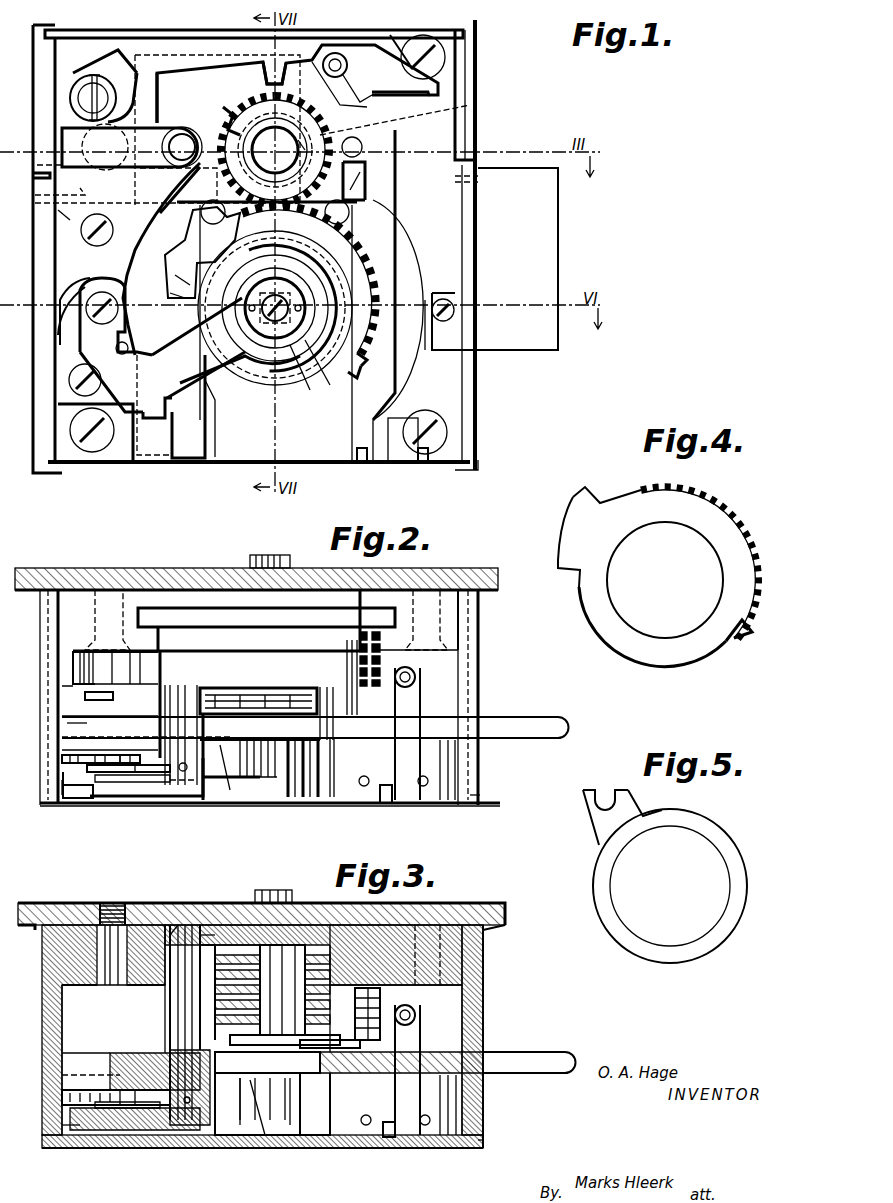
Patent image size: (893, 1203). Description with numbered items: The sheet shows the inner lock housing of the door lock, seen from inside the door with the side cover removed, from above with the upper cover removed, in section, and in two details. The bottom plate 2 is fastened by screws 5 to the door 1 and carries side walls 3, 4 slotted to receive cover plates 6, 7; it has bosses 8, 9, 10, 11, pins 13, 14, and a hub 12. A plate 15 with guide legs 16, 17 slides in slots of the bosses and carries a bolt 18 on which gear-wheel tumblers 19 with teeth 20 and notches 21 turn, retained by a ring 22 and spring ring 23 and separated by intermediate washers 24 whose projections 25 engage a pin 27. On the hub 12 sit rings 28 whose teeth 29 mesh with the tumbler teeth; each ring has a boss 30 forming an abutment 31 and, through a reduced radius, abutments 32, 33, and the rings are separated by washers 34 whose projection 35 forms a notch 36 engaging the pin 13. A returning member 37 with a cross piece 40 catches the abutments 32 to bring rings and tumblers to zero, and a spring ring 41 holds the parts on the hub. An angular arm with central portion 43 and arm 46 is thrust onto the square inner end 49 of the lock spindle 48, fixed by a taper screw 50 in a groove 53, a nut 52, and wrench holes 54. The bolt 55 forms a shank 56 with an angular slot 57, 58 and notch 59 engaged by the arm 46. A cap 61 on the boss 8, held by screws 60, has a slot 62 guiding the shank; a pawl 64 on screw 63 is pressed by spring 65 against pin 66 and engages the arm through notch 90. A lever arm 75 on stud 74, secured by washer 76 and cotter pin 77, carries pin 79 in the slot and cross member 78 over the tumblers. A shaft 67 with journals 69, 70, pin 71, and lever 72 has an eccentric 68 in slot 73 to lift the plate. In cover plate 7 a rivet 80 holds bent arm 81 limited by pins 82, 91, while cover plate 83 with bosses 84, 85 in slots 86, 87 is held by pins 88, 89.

In FIG. 2, the door 1 is at (68, 580).
In FIG. 3, the door 1 is at (52, 915).
In FIG. 2, the bottom plate 2 is at (140, 600).
In FIG. 3, the bottom plate 2 is at (425, 935).
In FIG. 1, the side wall 3 is at (50, 450).
In FIG. 2, the side wall 3 is at (42, 605).
In FIG. 3, the side wall 3 is at (48, 1018).
In FIG. 1, the side wall 4 is at (470, 445).
In FIG. 2, the side wall 4 is at (470, 633).
In FIG. 3, the side wall 4 is at (480, 990).
In FIG. 1, the screws 5 is at (423, 50).
In FIG. 2, the screws 5 is at (108, 580).
In FIG. 3, the screws 5 is at (100, 908).
In FIG. 1, the cover plate 6 is at (400, 40).
In FIG. 1, the cover plate 7 is at (72, 462).
In FIG. 2, the cover plate 7 is at (442, 663).
In FIG. 3, the cover plate 7 is at (455, 1010).
In FIG. 1, the boss 8 is at (130, 315).
In FIG. 2, the boss 8 is at (70, 703).
In FIG. 3, the boss 8 is at (75, 996).
In FIG. 1, the boss 9 is at (80, 47).
In FIG. 2, the boss 9 is at (70, 632).
In FIG. 3, the boss 9 is at (65, 955).
In FIG. 1, the boss 10 is at (122, 445).
In FIG. 1, the boss 11 is at (447, 405).
In FIG. 2, the boss 11 is at (450, 607).
In FIG. 3, the boss 11 is at (470, 945).
In FIG. 1, the hub 12 is at (275, 340).
In FIG. 1, the pin 13 is at (205, 235).
In FIG. 2, the pin 13 is at (215, 688).
In FIG. 3, the pin 13 is at (212, 1000).
In FIG. 1, the pin 14 is at (345, 212).
In FIG. 1, the plate 15 is at (165, 80).
In FIG. 2, the plate 15 is at (175, 618).
In FIG. 3, the plate 15 is at (345, 935).
In FIG. 1, the guide leg 16 is at (210, 440).
In FIG. 1, the guide leg 17 is at (360, 437).
In FIG. 1, the bolt 18 is at (245, 120).
In FIG. 3, the bolt 18 is at (320, 940).
In FIG. 1, the tumblers 19 is at (275, 135).
In FIG. 3, the tumblers 19 is at (262, 960).
In FIG. 1, the teeth 20 is at (345, 85).
In FIG. 1, the notch 21 is at (225, 125).
In FIG. 1, the ring 22 is at (292, 140).
In FIG. 1, the spring ring 23 is at (255, 148).
In FIG. 3, the intermediate washers 24 is at (240, 950).
In FIG. 1, the projection 25 is at (362, 133).
In FIG. 1, the pin 27 is at (362, 148).
In FIG. 3, the pin 27 is at (410, 930).
In FIG. 1, the rings 28 is at (367, 358).
In FIG. 4, the rings 28 is at (665, 660).
In FIG. 1, the teeth 29 is at (340, 290).
In FIG. 4, the teeth 29 is at (718, 500).
In FIG. 2, the teeth 29 is at (372, 688).
In FIG. 3, the teeth 29 is at (385, 1000).
In FIG. 1, the boss 30 is at (180, 283).
In FIG. 4, the boss 30 is at (590, 513).
In FIG. 4, the abutment 31 is at (595, 495).
In FIG. 1, the abutment 32 is at (180, 298).
In FIG. 4, the abutment 32 is at (568, 580).
In FIG. 1, the abutment 33 is at (357, 370).
In FIG. 4, the abutment 33 is at (745, 635).
In FIG. 4, the intermediate washers 34 is at (665, 580).
In FIG. 5, the intermediate washers 34 is at (670, 956).
In FIG. 1, the projection 35 is at (190, 255).
In FIG. 5, the projection 35 is at (614, 830).
In FIG. 5, the notch 36 is at (604, 792).
In FIG. 1, the returning member 37 is at (325, 355).
In FIG. 3, the returning member 37 is at (350, 1035).
In FIG. 1, the cross piece 40 is at (200, 340).
In FIG. 1, the spring ring 41 is at (323, 263).
In FIG. 1, the central portion 43 is at (292, 330).
In FIG. 2, the central portion 43 is at (290, 790).
In FIG. 3, the central portion 43 is at (330, 1140).
In FIG. 1, the arm 46 is at (192, 460).
In FIG. 2, the arm 46 is at (218, 785).
In FIG. 3, the arm 46 is at (245, 1130).
In FIG. 2, the lock spindle 48 is at (252, 558).
In FIG. 3, the lock spindle 48 is at (292, 893).
In FIG. 1, the square inner end 49 is at (240, 352).
In FIG. 1, the taper screw 50 is at (300, 345).
In FIG. 1, the nut 52 is at (265, 330).
In FIG. 1, the groove 53 is at (253, 335).
In FIG. 1, the holes 54 is at (318, 355).
In FIG. 1, the bolt 55 is at (520, 340).
In FIG. 2, the bolt 55 is at (520, 730).
In FIG. 3, the bolt 55 is at (515, 1065).
In FIG. 1, the bolt shank 56 is at (210, 215).
In FIG. 2, the bolt shank 56 is at (232, 745).
In FIG. 3, the bolt shank 56 is at (255, 1090).
In FIG. 1, the angular slot 57 is at (358, 80).
In FIG. 1, the angular slot 58 is at (420, 97).
In FIG. 1, the notch 59 is at (365, 185).
In FIG. 1, the screws 60 is at (82, 230).
In FIG. 1, the cap 61 is at (70, 256).
In FIG. 2, the cap 61 is at (80, 746).
In FIG. 3, the cap 61 is at (125, 1060).
In FIG. 1, the slot 62 is at (62, 193).
In FIG. 2, the slot 62 is at (67, 724).
In FIG. 3, the slot 62 is at (62, 1066).
In FIG. 1, the screw 63 is at (100, 318).
In FIG. 2, the screw 63 is at (105, 785).
In FIG. 3, the screw 63 is at (110, 1110).
In FIG. 1, the pawl 64 is at (95, 340).
In FIG. 2, the pawl 64 is at (140, 772).
In FIG. 3, the pawl 64 is at (147, 1108).
In FIG. 1, the spring 65 is at (70, 290).
In FIG. 2, the spring 65 is at (62, 769).
In FIG. 3, the spring 65 is at (62, 1091).
In FIG. 1, the pin 66 is at (115, 352).
In FIG. 1, the shaft 67 is at (157, 100).
In FIG. 2, the shaft 67 is at (182, 700).
In FIG. 3, the shaft 67 is at (185, 1030).
In FIG. 1, the eccentric 68 is at (160, 188).
In FIG. 3, the eccentric 68 is at (172, 935).
In FIG. 3, the journal 69 is at (200, 940).
In FIG. 3, the journal 70 is at (186, 1125).
In FIG. 2, the pin 71 is at (183, 771).
In FIG. 3, the pin 71 is at (200, 1100).
In FIG. 1, the lever 72 is at (70, 138).
In FIG. 2, the lever 72 is at (80, 788).
In FIG. 3, the lever 72 is at (72, 1115).
In FIG. 3, the slot 73 is at (225, 945).
In FIG. 1, the stud 74 is at (85, 97).
In FIG. 2, the stud 74 is at (90, 695).
In FIG. 1, the lever arm 75 is at (120, 65).
In FIG. 2, the lever arm 75 is at (95, 670).
In FIG. 1, the washer 76 is at (78, 86).
In FIG. 1, the cotter pin 77 is at (88, 72).
In FIG. 1, the cross member 78 is at (272, 78).
In FIG. 2, the cross member 78 is at (275, 672).
In FIG. 1, the pin 79 is at (336, 60).
In FIG. 2, the pin 79 is at (340, 760).
In FIG. 2, the rivet 80 is at (415, 680).
In FIG. 3, the rivet 80 is at (415, 1020).
In FIG. 1, the angularly bent arm 81 is at (403, 462).
In FIG. 2, the angularly bent arm 81 is at (408, 770).
In FIG. 3, the angularly bent arm 81 is at (410, 1115).
In FIG. 1, the pin 82 is at (423, 464).
In FIG. 2, the pin 82 is at (425, 786).
In FIG. 3, the pin 82 is at (428, 1126).
In FIG. 2, the cover plate 83 is at (300, 800).
In FIG. 3, the cover plate 83 is at (320, 1135).
In FIG. 2, the T-shaped boss 84 is at (80, 800).
In FIG. 3, the T-shaped boss 84 is at (80, 1135).
In FIG. 2, the T-shaped boss 85 is at (480, 796).
In FIG. 3, the T-shaped boss 85 is at (485, 1139).
In FIG. 1, the slot 86 is at (40, 178).
In FIG. 1, the slot 87 is at (452, 318).
In FIG. 2, the pin 88 is at (386, 803).
In FIG. 3, the pin 88 is at (390, 1137).
In FIG. 1, the pin 89 is at (432, 340).
In FIG. 2, the pin 89 is at (450, 790).
In FIG. 3, the pin 89 is at (470, 1135).
In FIG. 1, the notch 90 is at (172, 410).
In FIG. 1, the pin 91 is at (362, 464).
In FIG. 2, the pin 91 is at (364, 786).
In FIG. 3, the pin 91 is at (366, 1126).